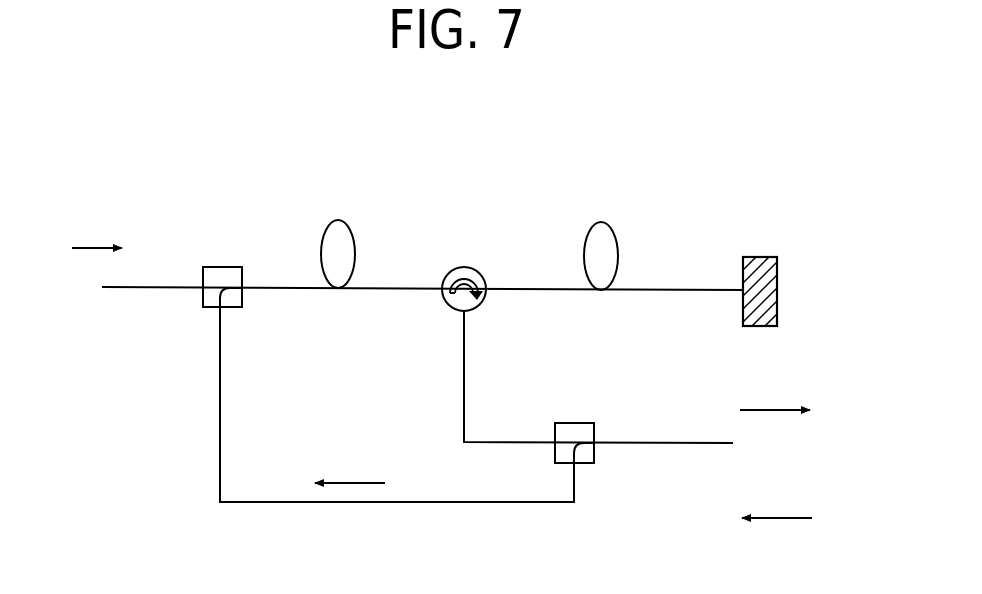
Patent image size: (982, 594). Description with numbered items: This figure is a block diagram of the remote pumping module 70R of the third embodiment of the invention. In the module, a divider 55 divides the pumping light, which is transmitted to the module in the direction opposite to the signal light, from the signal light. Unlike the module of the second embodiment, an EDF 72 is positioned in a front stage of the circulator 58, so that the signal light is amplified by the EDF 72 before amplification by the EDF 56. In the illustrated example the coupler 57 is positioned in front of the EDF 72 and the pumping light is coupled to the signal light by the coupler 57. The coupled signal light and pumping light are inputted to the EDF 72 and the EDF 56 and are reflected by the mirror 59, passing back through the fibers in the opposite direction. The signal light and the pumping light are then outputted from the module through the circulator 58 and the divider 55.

The remote pumping module 70R is at (657, 128).
The divider 55 is at (594, 452).
The EDF 56 is at (616, 240).
The coupler 57 is at (203, 297).
The circulator 58 is at (446, 305).
The mirror 59 is at (777, 293).
The EDF 72 is at (353, 238).